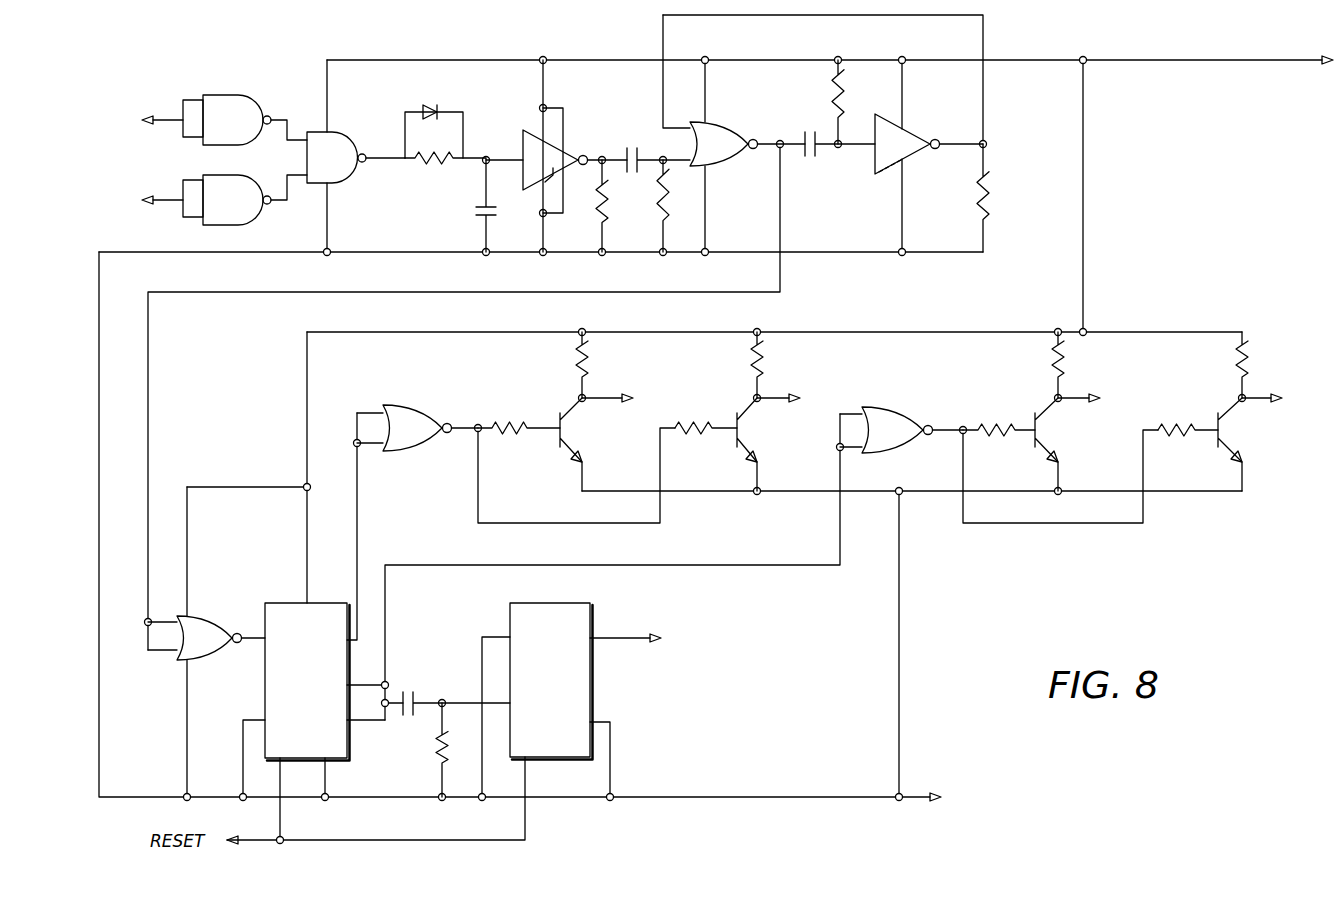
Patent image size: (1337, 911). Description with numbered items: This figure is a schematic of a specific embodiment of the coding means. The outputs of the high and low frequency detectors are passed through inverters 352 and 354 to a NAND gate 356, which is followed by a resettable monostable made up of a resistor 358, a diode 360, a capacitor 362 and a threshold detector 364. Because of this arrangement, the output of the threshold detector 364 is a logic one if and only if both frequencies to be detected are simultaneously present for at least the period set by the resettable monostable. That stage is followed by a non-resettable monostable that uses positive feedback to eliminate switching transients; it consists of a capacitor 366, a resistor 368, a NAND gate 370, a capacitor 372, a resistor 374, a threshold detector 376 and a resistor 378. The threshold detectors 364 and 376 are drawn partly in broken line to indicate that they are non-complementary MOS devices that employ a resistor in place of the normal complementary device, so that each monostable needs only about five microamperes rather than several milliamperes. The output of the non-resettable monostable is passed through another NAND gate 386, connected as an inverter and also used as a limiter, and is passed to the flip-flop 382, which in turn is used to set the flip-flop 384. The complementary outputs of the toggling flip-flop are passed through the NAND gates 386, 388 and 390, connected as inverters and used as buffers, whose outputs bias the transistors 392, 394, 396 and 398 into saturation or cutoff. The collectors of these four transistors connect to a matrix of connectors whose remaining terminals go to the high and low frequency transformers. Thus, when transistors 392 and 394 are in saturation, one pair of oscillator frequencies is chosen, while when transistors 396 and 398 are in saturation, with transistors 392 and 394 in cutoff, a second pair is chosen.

The inverter 352 is at (252, 85).
The inverter 354 is at (212, 175).
The NAND gate 356 is at (340, 132).
The resistor 358 is at (437, 164).
The diode 360 is at (440, 108).
The capacitor 362 is at (478, 219).
The threshold detector 364 is at (523, 135).
The capacitor 366 is at (640, 153).
The resistor 368 is at (660, 200).
The NAND gate 370 is at (722, 122).
The capacitor 372 is at (820, 158).
The resistor 374 is at (832, 112).
The threshold detector 376 is at (905, 128).
The resistor 378 is at (991, 196).
The flip-flop 382 is at (265, 680).
The flip-flop 384 is at (590, 605).
The NAND gate 386 is at (210, 616).
The NAND gate 388 is at (430, 380).
The NAND gate 390 is at (931, 390).
The transistor 392 is at (560, 414).
The transistor 394 is at (737, 413).
The transistor 396 is at (1035, 413).
The transistor 398 is at (1218, 413).